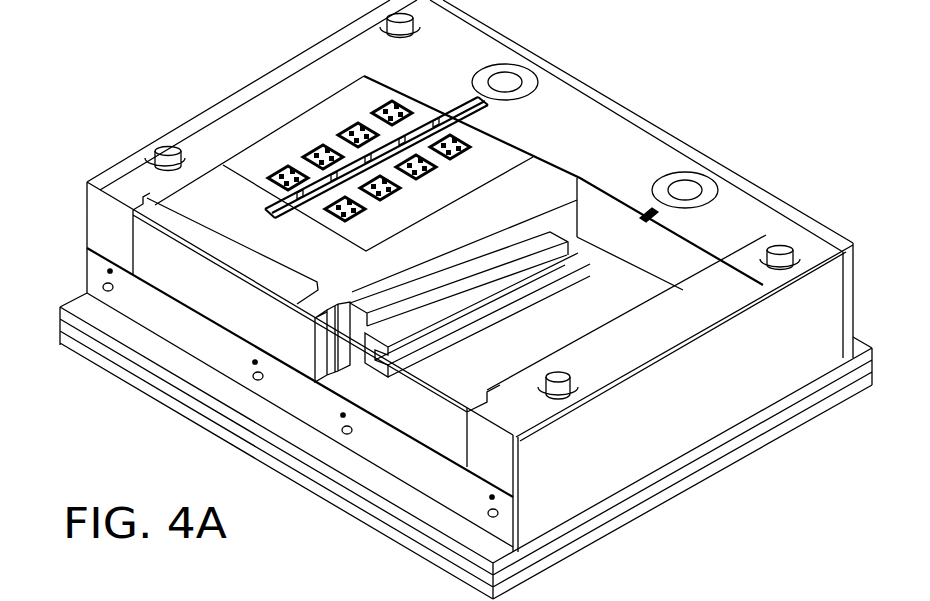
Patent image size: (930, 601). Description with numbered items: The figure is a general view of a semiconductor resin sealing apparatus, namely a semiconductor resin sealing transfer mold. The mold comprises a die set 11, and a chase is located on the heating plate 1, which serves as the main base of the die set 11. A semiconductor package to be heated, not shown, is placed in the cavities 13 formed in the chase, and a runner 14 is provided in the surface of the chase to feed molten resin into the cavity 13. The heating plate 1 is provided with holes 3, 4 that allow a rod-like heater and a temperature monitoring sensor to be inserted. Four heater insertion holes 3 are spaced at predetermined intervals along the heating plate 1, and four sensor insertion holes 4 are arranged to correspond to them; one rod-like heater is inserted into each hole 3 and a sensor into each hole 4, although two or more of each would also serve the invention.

The heating plate 1 is at (178, 326).
The heater insertion hole 3 is at (113, 289).
The sensor insertion hole 4 is at (110, 269).
The die set 11 is at (212, 73).
The cavity 13 is at (385, 108).
The runner 14 is at (452, 100).